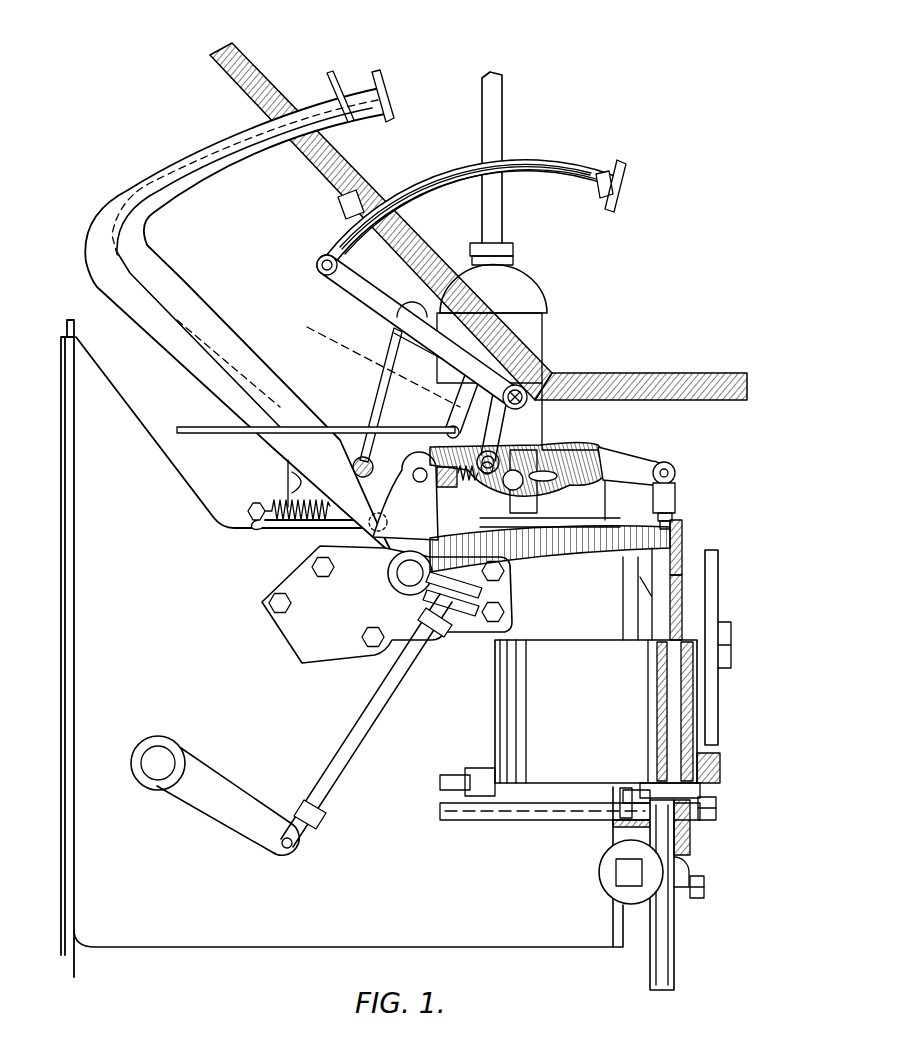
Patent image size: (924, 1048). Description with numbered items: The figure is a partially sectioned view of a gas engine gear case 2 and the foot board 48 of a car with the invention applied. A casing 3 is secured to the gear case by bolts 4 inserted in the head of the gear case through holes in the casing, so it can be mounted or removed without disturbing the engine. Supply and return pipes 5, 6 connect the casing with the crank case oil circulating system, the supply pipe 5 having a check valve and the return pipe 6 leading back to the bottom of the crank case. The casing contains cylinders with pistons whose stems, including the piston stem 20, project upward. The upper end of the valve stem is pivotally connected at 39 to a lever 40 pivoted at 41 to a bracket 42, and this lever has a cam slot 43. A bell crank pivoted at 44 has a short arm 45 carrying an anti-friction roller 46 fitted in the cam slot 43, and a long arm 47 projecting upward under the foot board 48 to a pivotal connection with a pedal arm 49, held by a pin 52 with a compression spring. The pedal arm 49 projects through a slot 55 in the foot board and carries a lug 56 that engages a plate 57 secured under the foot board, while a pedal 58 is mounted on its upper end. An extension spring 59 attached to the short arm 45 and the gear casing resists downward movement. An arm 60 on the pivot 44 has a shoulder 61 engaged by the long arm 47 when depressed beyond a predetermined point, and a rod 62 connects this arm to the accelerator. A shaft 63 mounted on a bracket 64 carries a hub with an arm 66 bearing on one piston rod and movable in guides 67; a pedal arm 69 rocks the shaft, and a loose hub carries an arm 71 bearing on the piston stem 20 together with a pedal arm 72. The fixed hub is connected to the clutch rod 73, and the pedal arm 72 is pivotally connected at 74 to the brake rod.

The gear case 2 is at (288, 932).
The casing 3 is at (515, 688).
The bolts 4 is at (697, 882).
The supply pipe 5 is at (440, 770).
The return pipe 6 is at (440, 810).
The piston stem 20 is at (680, 560).
The pivotal connection 39 is at (672, 465).
The lever 40 is at (633, 470).
The pivot 41 is at (377, 490).
The bracket 42 is at (360, 458).
The cam slot 43 is at (590, 460).
The pivot 44 is at (523, 373).
The short arm 45 is at (507, 428).
The anti-friction roller 46 is at (527, 443).
The long arm 47 is at (440, 362).
The foot board 48 is at (580, 378).
The pedal arm 49 is at (597, 185).
The pin 52 is at (318, 268).
The slot 55 is at (345, 197).
The lug 56 is at (432, 182).
The plate 57 is at (348, 212).
The pedal 58 is at (620, 182).
The extension spring 59 is at (320, 507).
The arm 60 is at (437, 360).
The shoulder 61 is at (307, 327).
The rod 62 is at (241, 433).
The shaft 63 is at (398, 574).
The bracket 64 is at (357, 607).
The arm 66 is at (625, 550).
The guides 67 is at (676, 543).
The pedal arm 69 is at (153, 258).
The arm 71 is at (633, 528).
The pedal arm 72 is at (133, 293).
The clutch rod 73 is at (337, 750).
The pivotal connection 74 is at (413, 483).